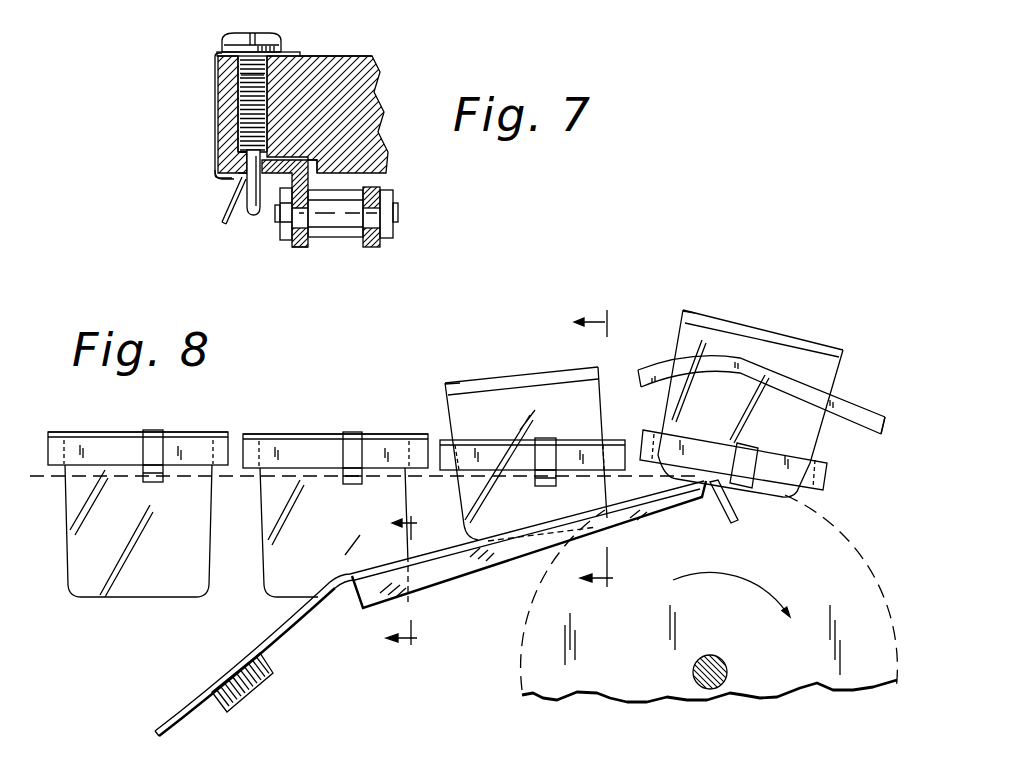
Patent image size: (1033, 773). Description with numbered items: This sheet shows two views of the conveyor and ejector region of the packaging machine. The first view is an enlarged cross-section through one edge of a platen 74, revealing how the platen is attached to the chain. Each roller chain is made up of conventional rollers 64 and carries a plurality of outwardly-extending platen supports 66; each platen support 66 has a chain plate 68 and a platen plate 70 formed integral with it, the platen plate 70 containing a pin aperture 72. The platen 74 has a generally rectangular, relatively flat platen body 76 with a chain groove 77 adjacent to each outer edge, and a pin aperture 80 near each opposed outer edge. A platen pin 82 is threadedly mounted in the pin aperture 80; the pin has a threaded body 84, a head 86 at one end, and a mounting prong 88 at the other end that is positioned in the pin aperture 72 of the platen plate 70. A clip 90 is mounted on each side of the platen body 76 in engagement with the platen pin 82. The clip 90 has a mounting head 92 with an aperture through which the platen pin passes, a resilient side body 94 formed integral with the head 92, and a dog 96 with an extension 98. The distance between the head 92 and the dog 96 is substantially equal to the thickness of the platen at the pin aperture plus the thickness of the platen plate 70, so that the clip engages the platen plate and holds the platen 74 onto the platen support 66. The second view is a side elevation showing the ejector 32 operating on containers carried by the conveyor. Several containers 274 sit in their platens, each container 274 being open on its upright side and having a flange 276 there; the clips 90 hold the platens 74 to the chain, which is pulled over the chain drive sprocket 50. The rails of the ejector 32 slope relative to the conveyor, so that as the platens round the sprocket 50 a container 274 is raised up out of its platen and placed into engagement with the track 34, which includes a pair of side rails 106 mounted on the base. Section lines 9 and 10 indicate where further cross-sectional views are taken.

In FIG. 7, the roller 64 is at (334, 241).
In FIG. 7, the platen support 66 is at (305, 249).
In FIG. 7, the chain plate 68 is at (284, 240).
In FIG. 7, the platen plate 70 is at (291, 192).
In FIG. 7, the pin aperture 72 is at (245, 163).
In FIG. 7, the platen 74 is at (357, 55).
In FIG. 8, the platen 74 is at (250, 470).
In FIG. 7, the platen body 76 is at (381, 84).
In FIG. 7, the chain groove 77 is at (314, 170).
In FIG. 7, the pin aperture 80 is at (243, 79).
In FIG. 7, the platen pin 82 is at (240, 33).
In FIG. 7, the threaded body 84 is at (237, 112).
In FIG. 7, the head 86 is at (266, 32).
In FIG. 7, the mounting prong 88 is at (246, 214).
In FIG. 7, the clip 90 is at (214, 107).
In FIG. 8, the clip 90 is at (163, 449).
In FIG. 7, the mounting head 92 is at (297, 51).
In FIG. 7, the resilient side body 94 is at (214, 76).
In FIG. 7, the dog 96 is at (232, 178).
In FIG. 7, the extension 98 is at (224, 201).
In FIG. 8, the section line 9 is at (389, 581).
In FIG. 8, the section line 10 is at (580, 451).
In FIG. 8, the ejector 32 is at (436, 583).
In FIG. 8, the track 34 is at (886, 400).
In FIG. 8, the chain drive sprocket 50 is at (806, 688).
In FIG. 8, the side rail 106 is at (848, 422).
In FIG. 8, the container 274 is at (170, 600).
In FIG. 8, the flange 276 is at (441, 383).